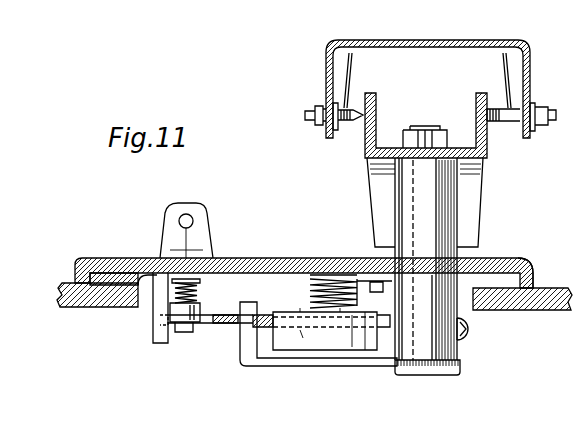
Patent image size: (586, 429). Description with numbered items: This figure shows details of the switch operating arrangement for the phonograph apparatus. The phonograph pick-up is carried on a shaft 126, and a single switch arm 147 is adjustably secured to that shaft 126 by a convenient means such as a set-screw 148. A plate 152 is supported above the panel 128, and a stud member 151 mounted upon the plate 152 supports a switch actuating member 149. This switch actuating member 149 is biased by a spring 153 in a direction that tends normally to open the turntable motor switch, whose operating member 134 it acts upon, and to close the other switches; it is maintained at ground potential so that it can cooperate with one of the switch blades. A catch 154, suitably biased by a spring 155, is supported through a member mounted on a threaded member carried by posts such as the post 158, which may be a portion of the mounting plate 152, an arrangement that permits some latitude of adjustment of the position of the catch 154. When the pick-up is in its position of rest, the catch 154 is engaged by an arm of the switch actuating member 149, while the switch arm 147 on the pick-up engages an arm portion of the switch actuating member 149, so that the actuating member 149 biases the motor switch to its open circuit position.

The shaft 126 is at (427, 375).
The panel 128 is at (540, 288).
The operating member 134 is at (350, 347).
The switch arm 147 is at (287, 365).
The set-screw 148 is at (467, 340).
The switch actuating member 149 is at (227, 325).
The stud member 151 is at (337, 250).
The plate 152 is at (500, 259).
The spring 153 is at (312, 291).
The catch 154 is at (192, 332).
The spring 155 is at (198, 295).
The post 158 is at (177, 243).